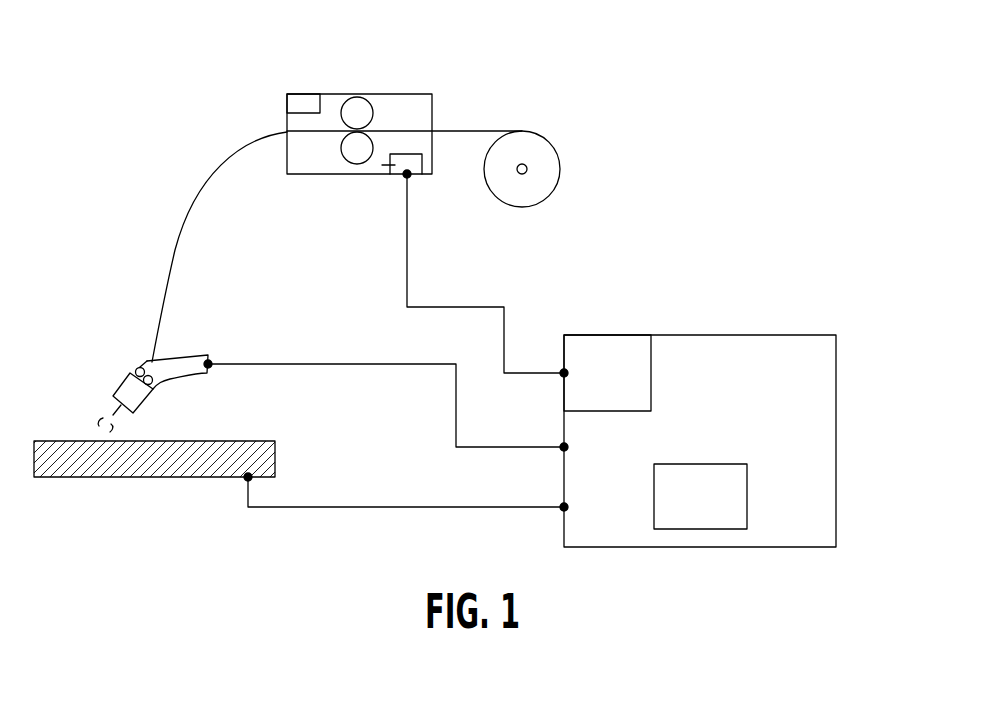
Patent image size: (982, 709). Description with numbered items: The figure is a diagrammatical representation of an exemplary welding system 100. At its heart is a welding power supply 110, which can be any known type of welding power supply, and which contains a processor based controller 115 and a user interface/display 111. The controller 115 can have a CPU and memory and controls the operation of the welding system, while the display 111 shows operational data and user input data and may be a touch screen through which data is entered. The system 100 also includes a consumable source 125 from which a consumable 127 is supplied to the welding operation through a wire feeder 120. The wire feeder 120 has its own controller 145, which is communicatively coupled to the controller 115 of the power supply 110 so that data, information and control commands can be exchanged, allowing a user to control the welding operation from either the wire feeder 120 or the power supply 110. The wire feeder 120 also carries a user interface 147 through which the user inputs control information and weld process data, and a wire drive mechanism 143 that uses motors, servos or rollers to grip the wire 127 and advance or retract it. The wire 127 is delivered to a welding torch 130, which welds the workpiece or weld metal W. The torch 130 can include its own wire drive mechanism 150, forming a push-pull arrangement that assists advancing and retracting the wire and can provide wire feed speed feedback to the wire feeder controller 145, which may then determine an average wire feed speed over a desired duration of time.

The welding system 100 is at (560, 48).
The welding power supply 110 is at (745, 335).
The user interface/display 111 is at (702, 512).
The processor based controller 115 is at (592, 335).
The wire feeder 120 is at (371, 94).
The consumable source 125 is at (551, 139).
The consumable 127 is at (228, 168).
The welding torch 130 is at (137, 370).
The wire drive mechanism 143 is at (340, 150).
The controller 145 is at (393, 165).
The user interface 147 is at (306, 100).
The wire drive mechanism 150 is at (141, 366).
The workpiece W is at (133, 467).